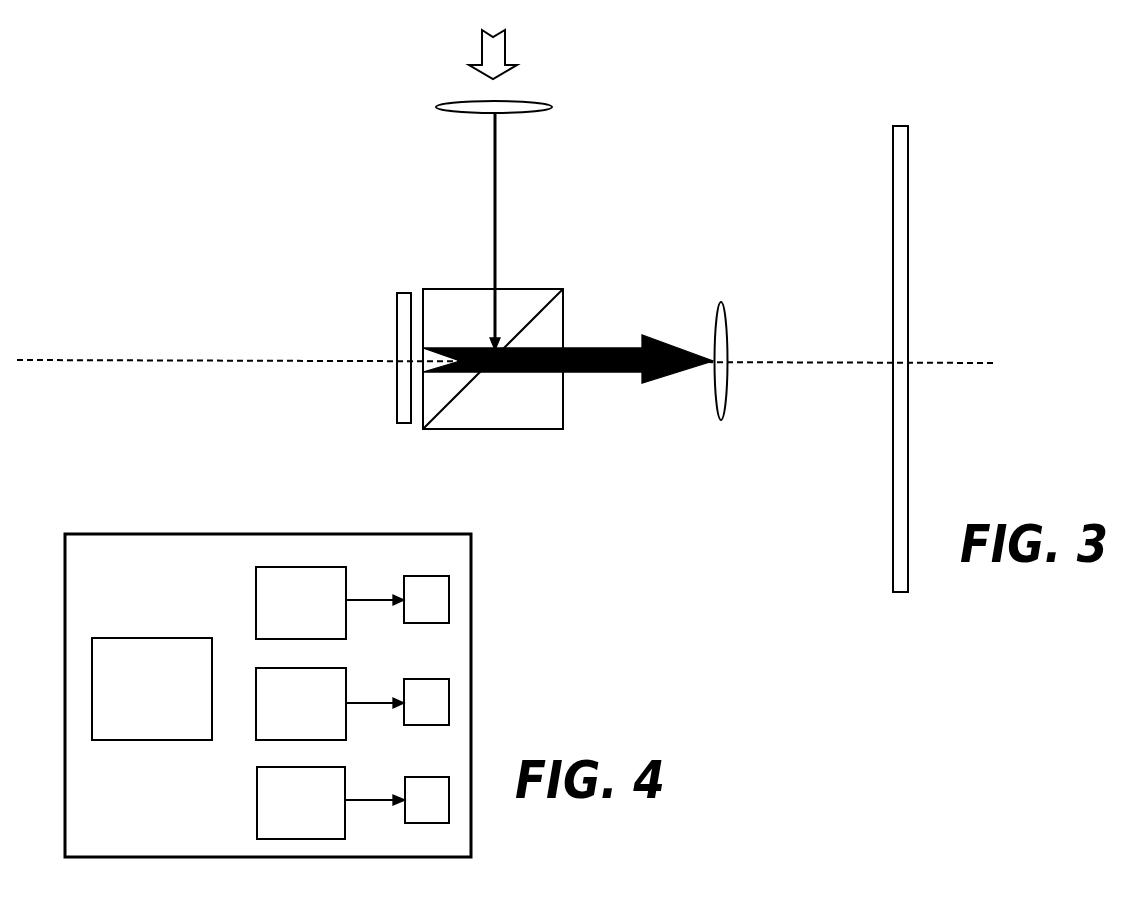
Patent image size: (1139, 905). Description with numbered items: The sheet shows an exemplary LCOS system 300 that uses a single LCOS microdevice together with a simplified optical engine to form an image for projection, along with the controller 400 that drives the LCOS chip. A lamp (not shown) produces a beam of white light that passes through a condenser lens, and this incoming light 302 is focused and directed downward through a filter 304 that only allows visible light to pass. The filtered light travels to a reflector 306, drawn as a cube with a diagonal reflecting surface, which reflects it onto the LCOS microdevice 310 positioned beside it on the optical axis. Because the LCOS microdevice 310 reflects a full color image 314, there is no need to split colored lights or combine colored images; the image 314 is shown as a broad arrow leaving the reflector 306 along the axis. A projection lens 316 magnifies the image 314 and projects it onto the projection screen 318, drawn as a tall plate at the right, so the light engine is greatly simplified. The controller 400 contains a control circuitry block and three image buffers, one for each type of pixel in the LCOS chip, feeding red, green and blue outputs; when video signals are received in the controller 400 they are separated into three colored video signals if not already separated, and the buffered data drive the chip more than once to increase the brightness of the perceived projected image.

In FIG. 3, the LCOS system 300 is at (506, 304).
In FIG. 3, the incoming light beam 302 is at (515, 49).
In FIG. 3, the filter 304 is at (518, 222).
In FIG. 3, the reflector 306 is at (493, 379).
In FIG. 3, the LCOS microdevice 310 is at (383, 358).
In FIG. 3, the full color image 314 is at (568, 347).
In FIG. 3, the projection lens 316 is at (749, 361).
In FIG. 3, the projection screen 318 is at (880, 359).
In FIG. 4, the controller 400 is at (268, 695).